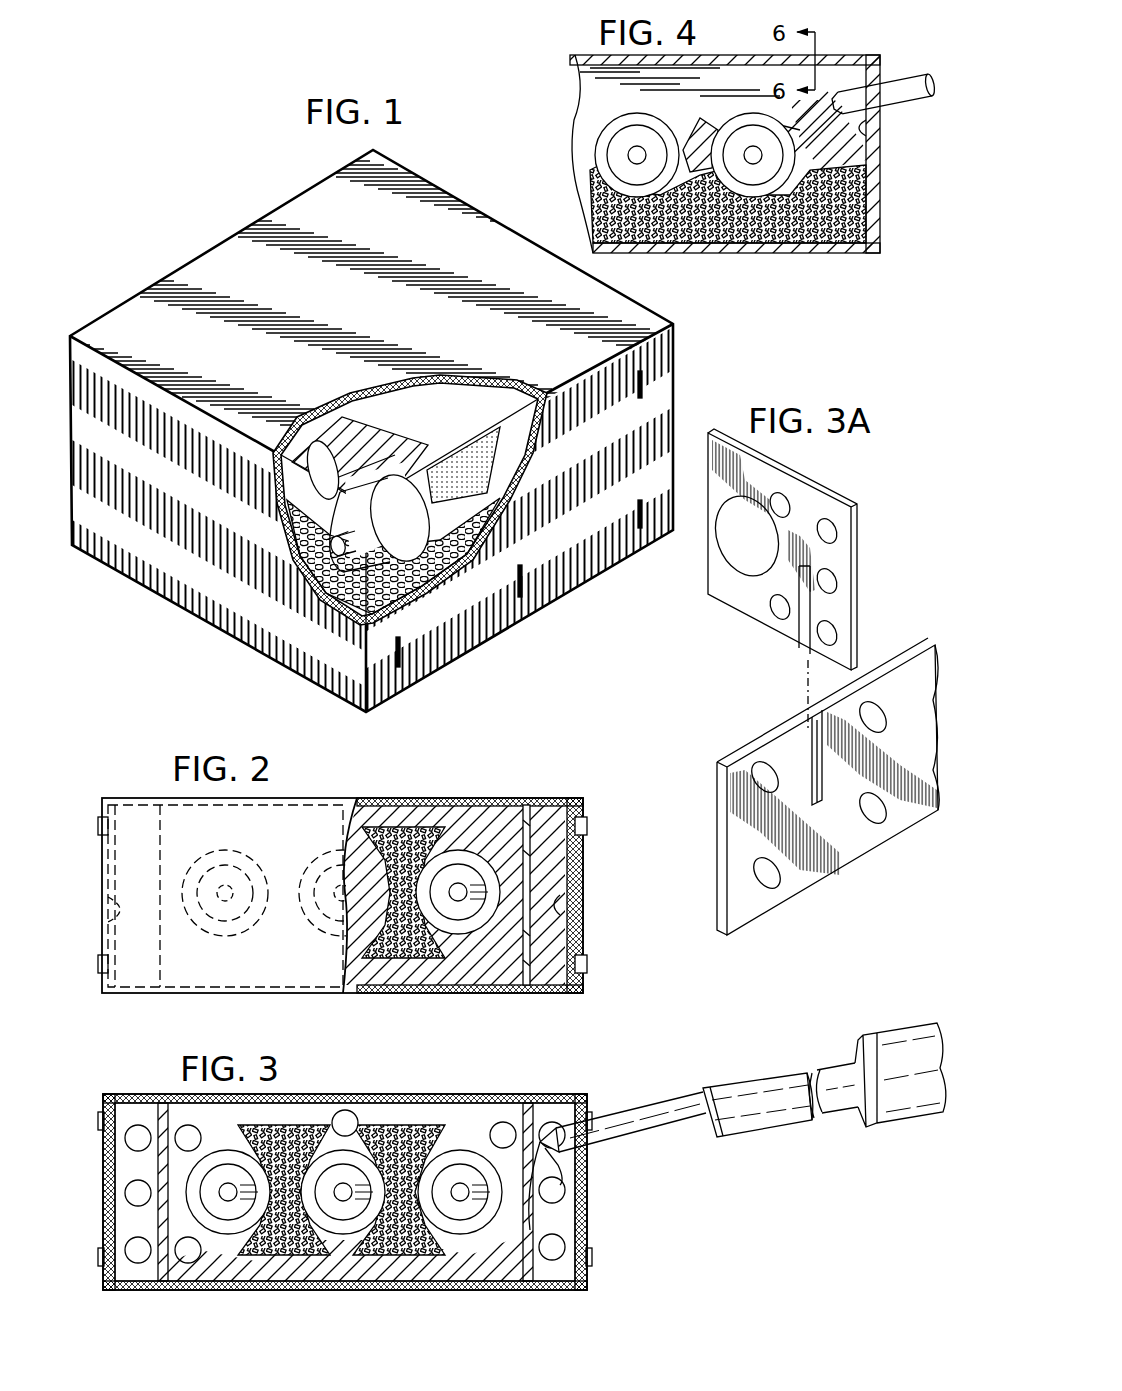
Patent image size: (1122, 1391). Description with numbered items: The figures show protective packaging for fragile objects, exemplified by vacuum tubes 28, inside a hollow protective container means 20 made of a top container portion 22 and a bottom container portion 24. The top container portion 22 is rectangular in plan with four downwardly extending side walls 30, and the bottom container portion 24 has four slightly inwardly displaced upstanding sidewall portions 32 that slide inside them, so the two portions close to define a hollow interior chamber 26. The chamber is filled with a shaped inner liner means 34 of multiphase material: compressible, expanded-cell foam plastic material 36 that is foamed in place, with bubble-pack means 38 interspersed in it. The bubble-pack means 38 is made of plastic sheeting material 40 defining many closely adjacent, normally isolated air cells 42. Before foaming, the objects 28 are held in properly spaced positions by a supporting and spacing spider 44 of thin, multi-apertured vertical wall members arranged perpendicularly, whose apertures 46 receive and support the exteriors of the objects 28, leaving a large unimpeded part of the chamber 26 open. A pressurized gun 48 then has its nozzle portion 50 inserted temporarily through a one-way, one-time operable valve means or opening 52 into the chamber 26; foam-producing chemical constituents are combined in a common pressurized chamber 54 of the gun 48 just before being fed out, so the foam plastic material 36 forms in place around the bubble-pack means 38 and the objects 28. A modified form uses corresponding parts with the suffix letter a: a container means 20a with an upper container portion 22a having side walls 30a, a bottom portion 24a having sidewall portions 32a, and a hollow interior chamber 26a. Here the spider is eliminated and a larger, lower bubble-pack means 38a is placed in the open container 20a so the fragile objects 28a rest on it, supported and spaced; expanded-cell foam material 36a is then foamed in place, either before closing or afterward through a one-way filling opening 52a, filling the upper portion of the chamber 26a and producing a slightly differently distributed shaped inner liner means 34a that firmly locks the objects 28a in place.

In FIG. 1, the hollow protective container means 20 is at (182, 255).
In FIG. 2, the hollow protective container means 20 is at (135, 788).
In FIG. 3, the hollow protective container means 20 is at (600, 1272).
In FIG. 4, the container means 20a is at (588, 207).
In FIG. 1, the top container portion 22 is at (317, 226).
In FIG. 2, the top container portion 22 is at (327, 788).
In FIG. 3, the top container portion 22 is at (345, 1098).
In FIG. 4, the upper container portion 22a is at (576, 52).
In FIG. 2, the bottom container portion 24 is at (207, 996).
In FIG. 3, the bottom container portion 24 is at (350, 1290).
In FIG. 4, the bottom portion 24a is at (753, 256).
In FIG. 3, the hollow interior chamber 26 is at (215, 1120).
In FIG. 4, the hollow interior chamber 26a is at (616, 92).
In FIG. 1, the vacuum tubes 28 is at (388, 540).
In FIG. 2, the vacuum tubes 28 is at (463, 920).
In FIG. 3, the vacuum tubes 28 is at (200, 1218).
In FIG. 4, the fragile objects 28a is at (597, 150).
In FIG. 1, the side walls 30 is at (562, 577).
In FIG. 2, the side walls 30 is at (585, 868).
In FIG. 3, the side walls 30 is at (345, 1192).
In FIG. 4, the side walls 30a is at (870, 140).
In FIG. 2, the sidewall portions 32 is at (106, 918).
In FIG. 4, the sidewall portions 32a is at (870, 128).
In FIG. 1, the shaped inner liner means 34 is at (362, 445).
In FIG. 2, the shaped inner liner means 34 is at (470, 814).
In FIG. 4, the shaped inner liner means 34a is at (826, 88).
In FIG. 1, the foam plastic material 36 is at (296, 428).
In FIG. 2, the foam plastic material 36 is at (422, 815).
In FIG. 3, the foam plastic material 36 is at (275, 1260).
In FIG. 4, the expanded-cell foam material 36a is at (700, 145).
In FIG. 2, the bubble-pack means 38 is at (403, 960).
In FIG. 3, the bubble-pack means 38 is at (288, 1130).
In FIG. 4, the lower bubble-pack means 38a is at (720, 235).
In FIG. 1, the plastic sheeting material 40 is at (309, 582).
In FIG. 4, the plastic sheeting material 40 is at (873, 224).
In FIG. 2, the plastic sheeting material 40 is at (440, 956).
In FIG. 3, the plastic sheeting material 40 is at (388, 1258).
In FIG. 1, the air cells 42 is at (309, 607).
In FIG. 4, the air cells 42 is at (845, 254).
In FIG. 2, the air cells 42 is at (418, 955).
In FIG. 3, the air cells 42 is at (420, 1262).
In FIG. 2, the supporting and spacing spider 44 is at (526, 895).
In FIG. 3, the supporting and spacing spider 44 is at (545, 1110).
In FIG. 3A, the supporting and spacing spider 44 is at (756, 636).
In FIG. 3, the apertures 46 is at (225, 1258).
In FIG. 3, the pressurized gun 48 is at (838, 1062).
In FIG. 3, the nozzle portion 50 is at (618, 1124).
In FIG. 3, the one-way valve means or opening 52 is at (594, 1155).
In FIG. 4, the one-way filling opening 52a is at (891, 72).
In FIG. 3, the pressurized chamber 54 is at (888, 1040).